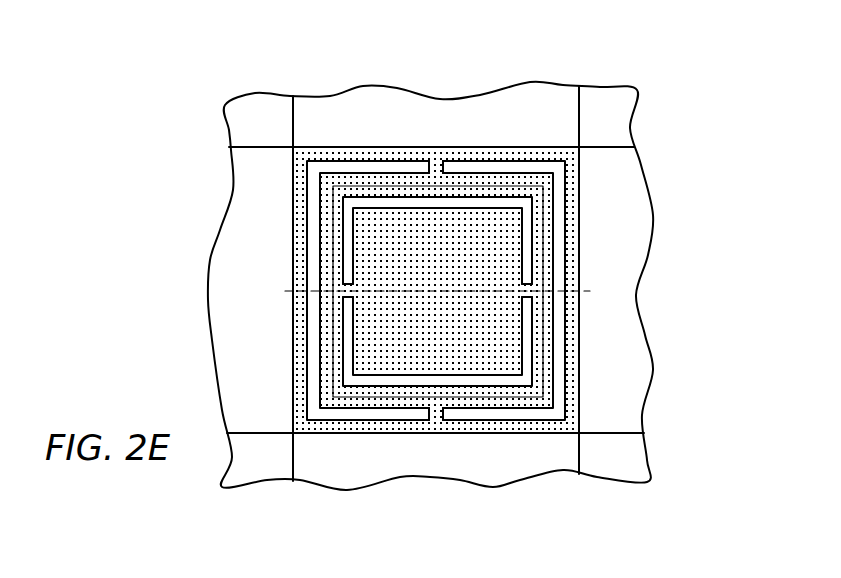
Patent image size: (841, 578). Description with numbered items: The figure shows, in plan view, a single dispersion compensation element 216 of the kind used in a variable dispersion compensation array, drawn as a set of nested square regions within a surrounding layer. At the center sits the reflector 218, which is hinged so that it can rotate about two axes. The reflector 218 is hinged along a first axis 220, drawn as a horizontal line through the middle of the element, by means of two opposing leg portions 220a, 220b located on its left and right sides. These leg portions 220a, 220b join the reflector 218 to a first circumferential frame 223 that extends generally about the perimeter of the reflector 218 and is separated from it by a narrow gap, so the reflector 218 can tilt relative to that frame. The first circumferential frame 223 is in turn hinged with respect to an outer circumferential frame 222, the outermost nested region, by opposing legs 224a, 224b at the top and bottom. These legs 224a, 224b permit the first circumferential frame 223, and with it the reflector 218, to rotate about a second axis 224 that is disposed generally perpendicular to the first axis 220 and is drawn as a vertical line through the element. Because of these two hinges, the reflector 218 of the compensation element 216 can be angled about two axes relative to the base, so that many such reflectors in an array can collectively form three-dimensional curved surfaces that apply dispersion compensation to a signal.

The dispersion compensation element 216 is at (263, 163).
The reflector 218 is at (483, 352).
The first axis 220 is at (448, 280).
The leg portion 220a is at (349, 293).
The leg portion 220b is at (530, 291).
The outer circumferential frame 222 is at (387, 153).
The first circumferential frame 223 is at (534, 383).
The second axis 224 is at (447, 205).
The leg 224a is at (437, 438).
The leg 224b is at (437, 412).